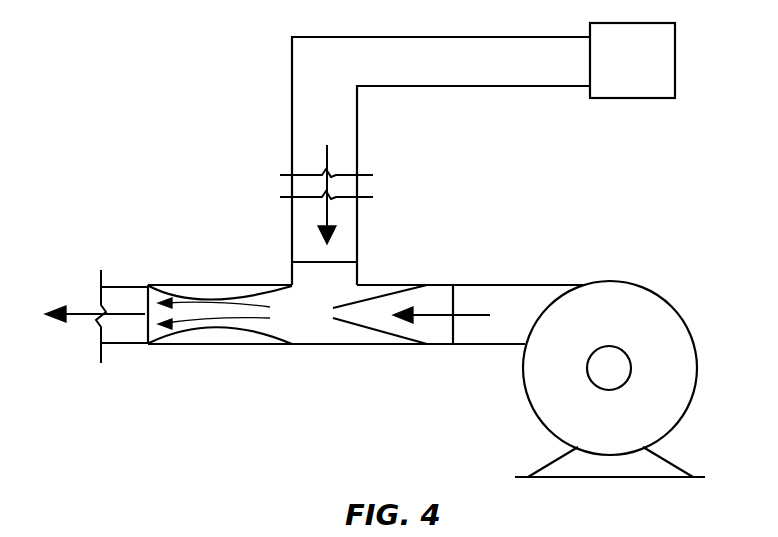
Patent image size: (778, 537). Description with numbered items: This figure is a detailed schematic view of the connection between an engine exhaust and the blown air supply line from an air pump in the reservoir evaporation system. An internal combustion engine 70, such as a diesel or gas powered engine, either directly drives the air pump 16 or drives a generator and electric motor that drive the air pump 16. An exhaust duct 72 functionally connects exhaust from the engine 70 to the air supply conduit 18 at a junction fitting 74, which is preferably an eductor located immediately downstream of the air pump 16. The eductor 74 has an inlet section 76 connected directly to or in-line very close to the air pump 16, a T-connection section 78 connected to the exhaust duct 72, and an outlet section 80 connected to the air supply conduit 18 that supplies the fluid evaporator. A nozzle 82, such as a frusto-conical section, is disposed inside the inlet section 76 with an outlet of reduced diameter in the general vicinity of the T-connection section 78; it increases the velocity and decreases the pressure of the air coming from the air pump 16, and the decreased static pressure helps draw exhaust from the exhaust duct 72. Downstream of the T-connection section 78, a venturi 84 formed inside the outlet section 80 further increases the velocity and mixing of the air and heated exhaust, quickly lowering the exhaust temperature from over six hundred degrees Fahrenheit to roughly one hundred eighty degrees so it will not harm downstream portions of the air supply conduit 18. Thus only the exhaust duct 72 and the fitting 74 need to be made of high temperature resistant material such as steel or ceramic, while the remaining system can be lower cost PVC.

The air pump 16 is at (633, 283).
The air supply conduit 18 is at (122, 284).
The internal combustion engine 70 is at (675, 58).
The exhaust duct 72 is at (357, 215).
The junction fitting 74 is at (275, 346).
The inlet section 76 is at (437, 283).
The T-connection section 78 is at (292, 272).
The outlet section 80 is at (162, 346).
The nozzle 82 is at (377, 325).
The venturi 84 is at (227, 338).